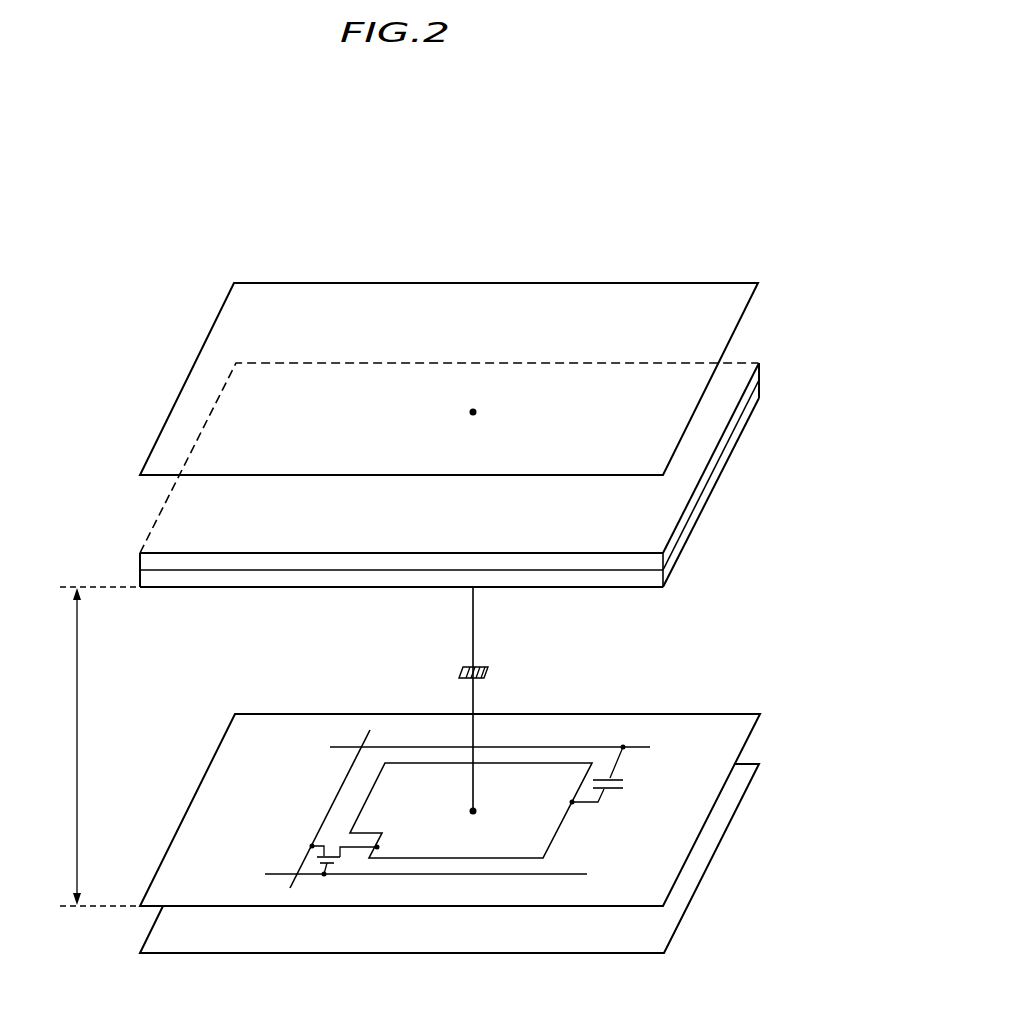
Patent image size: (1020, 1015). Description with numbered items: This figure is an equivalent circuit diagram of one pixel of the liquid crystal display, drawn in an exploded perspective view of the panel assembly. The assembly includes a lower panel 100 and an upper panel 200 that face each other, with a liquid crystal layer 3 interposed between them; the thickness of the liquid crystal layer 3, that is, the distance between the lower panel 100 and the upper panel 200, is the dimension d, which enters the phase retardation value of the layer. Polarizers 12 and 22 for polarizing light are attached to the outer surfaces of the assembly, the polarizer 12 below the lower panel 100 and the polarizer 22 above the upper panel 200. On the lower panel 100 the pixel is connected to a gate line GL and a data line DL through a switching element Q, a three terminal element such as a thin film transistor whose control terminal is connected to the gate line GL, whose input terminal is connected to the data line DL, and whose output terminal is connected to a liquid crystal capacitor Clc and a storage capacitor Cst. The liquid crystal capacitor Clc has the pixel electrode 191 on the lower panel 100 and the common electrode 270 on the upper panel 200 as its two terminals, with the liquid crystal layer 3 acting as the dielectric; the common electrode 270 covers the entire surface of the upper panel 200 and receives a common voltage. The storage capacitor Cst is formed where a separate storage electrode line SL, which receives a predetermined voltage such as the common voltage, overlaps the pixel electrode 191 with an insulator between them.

The polarizer 22 is at (678, 283).
The upper panel 200 is at (788, 373).
The common electrode 270 is at (715, 489).
The liquid crystal layer 3 is at (604, 699).
The lower panel 100 is at (492, 810).
The polarizer 12 is at (715, 857).
The pixel electrode 191 is at (563, 825).
The liquid crystal capacitor Clc is at (496, 674).
The storage capacitor Cst is at (617, 774).
The switching element Q is at (344, 847).
The storage electrode line SL is at (472, 745).
The gate line GL is at (408, 873).
The data line DL is at (330, 818).
The distance between the lower panel and the upper panel d is at (96, 746).